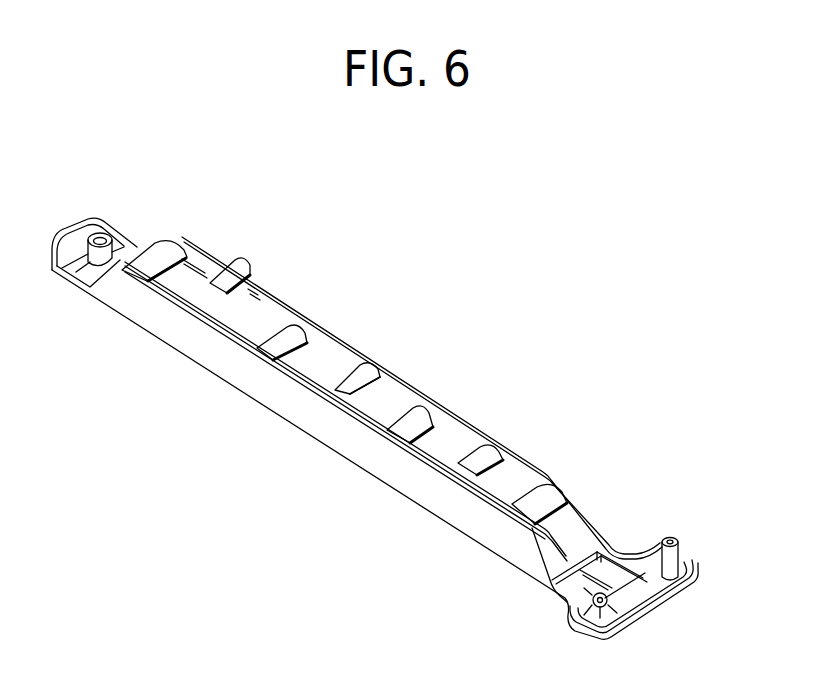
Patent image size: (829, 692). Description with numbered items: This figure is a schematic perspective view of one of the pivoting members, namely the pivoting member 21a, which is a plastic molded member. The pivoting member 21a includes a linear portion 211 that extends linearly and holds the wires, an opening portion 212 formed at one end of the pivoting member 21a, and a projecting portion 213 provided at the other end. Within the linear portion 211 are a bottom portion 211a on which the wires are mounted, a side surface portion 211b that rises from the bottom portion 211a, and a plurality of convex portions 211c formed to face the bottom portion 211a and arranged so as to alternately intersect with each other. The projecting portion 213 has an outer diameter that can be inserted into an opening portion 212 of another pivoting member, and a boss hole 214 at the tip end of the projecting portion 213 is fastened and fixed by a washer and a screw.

The linear portion 211 is at (587, 416).
The bottom portion 211a is at (314, 384).
The side surface portion 211b is at (450, 428).
The convex portions 211c is at (183, 245).
The opening portion 212 is at (102, 241).
The projecting portion 213 is at (638, 544).
The boss hole 214 is at (667, 540).
The pivoting member 21a is at (294, 473).